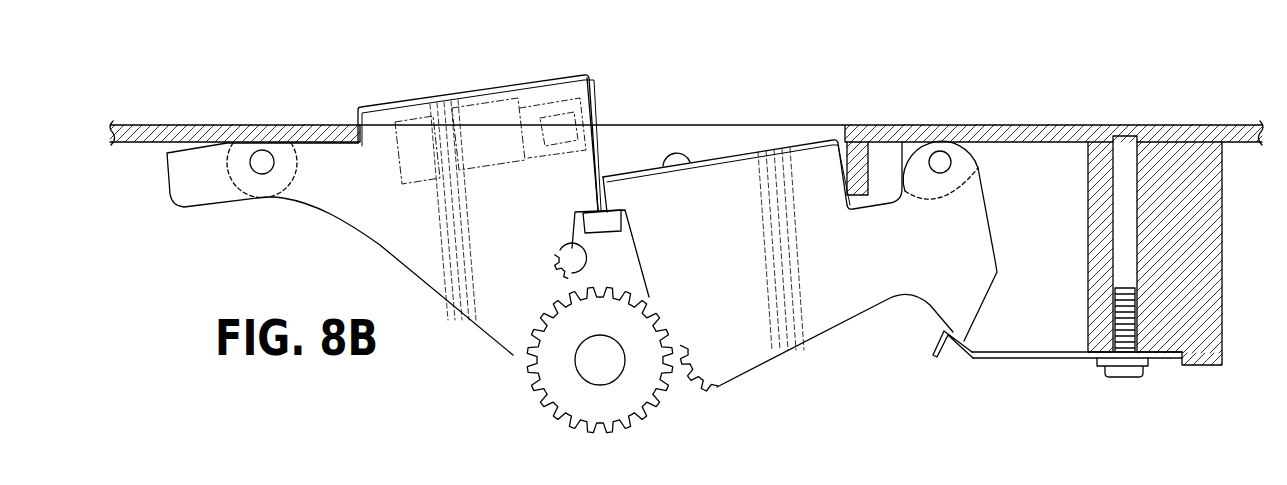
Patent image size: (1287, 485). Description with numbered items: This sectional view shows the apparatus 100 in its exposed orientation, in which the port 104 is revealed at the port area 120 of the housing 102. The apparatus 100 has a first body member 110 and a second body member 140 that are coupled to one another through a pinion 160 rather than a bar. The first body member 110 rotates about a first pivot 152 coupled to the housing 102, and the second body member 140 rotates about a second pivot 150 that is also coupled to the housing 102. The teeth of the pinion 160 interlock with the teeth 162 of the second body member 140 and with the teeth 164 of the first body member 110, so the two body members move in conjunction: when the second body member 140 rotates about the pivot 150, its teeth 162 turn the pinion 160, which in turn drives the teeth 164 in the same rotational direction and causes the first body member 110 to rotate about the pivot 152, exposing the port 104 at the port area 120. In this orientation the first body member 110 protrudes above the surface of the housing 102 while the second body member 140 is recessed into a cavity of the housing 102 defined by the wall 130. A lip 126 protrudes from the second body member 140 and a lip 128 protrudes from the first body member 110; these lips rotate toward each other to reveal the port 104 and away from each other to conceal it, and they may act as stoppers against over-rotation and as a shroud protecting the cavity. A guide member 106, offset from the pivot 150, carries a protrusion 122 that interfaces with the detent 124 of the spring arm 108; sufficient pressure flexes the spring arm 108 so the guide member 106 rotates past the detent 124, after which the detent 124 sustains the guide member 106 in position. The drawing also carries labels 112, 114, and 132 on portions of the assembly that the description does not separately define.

The apparatus 100 is at (927, 84).
The housing 102 is at (212, 125).
The port 104 is at (545, 108).
The guide member 106 is at (914, 360).
The spring arm 108 is at (1050, 371).
The first body member 110 is at (395, 184).
The first housing body 112 is at (412, 106).
The stop block 114 is at (805, 140).
The port area 120 is at (816, 220).
The protrusion 122 is at (983, 307).
The detent 124 is at (956, 354).
The lip 126 is at (623, 215).
The lip 128 is at (603, 232).
The wall 130 is at (696, 145).
The end wall 132 is at (596, 104).
The second body member 140 is at (746, 145).
The second pivot 150 is at (940, 174).
The first pivot 152 is at (262, 175).
The pinion 160 is at (579, 422).
The teeth 162 is at (688, 382).
The teeth 164 is at (564, 254).